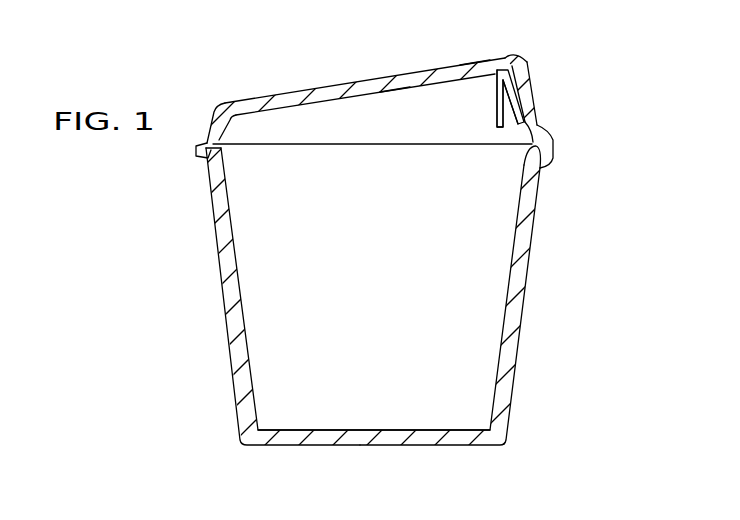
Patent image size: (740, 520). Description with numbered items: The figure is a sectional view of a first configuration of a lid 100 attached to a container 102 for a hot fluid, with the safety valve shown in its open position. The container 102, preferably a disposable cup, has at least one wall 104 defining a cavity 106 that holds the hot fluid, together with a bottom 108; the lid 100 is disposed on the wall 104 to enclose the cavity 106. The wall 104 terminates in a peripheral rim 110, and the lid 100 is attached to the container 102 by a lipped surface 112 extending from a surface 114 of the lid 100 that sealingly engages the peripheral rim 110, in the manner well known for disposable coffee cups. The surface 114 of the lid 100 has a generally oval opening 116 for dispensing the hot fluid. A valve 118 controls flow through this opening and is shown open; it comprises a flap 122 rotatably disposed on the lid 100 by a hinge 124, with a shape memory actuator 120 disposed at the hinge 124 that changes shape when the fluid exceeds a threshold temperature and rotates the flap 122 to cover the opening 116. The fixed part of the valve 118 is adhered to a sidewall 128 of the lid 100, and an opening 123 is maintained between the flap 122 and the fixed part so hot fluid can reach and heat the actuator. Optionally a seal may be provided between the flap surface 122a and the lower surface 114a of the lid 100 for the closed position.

The lid 100 is at (243, 96).
The container 102 is at (218, 255).
The wall 104 is at (515, 372).
The cavity 106 is at (402, 306).
The bottom 108 is at (376, 447).
The peripheral rim 110 is at (222, 150).
The lipped surface 112 is at (203, 146).
The surface 114 is at (289, 91).
The lower surface 114a is at (390, 97).
The opening 116 is at (479, 58).
The valve 118 is at (523, 90).
The shape memory actuator 120 is at (521, 61).
The flap 122 is at (496, 111).
The surface of the flap 122a is at (512, 124).
The opening 123 is at (537, 166).
The hinge 124 is at (507, 57).
The sidewall 128 is at (541, 118).